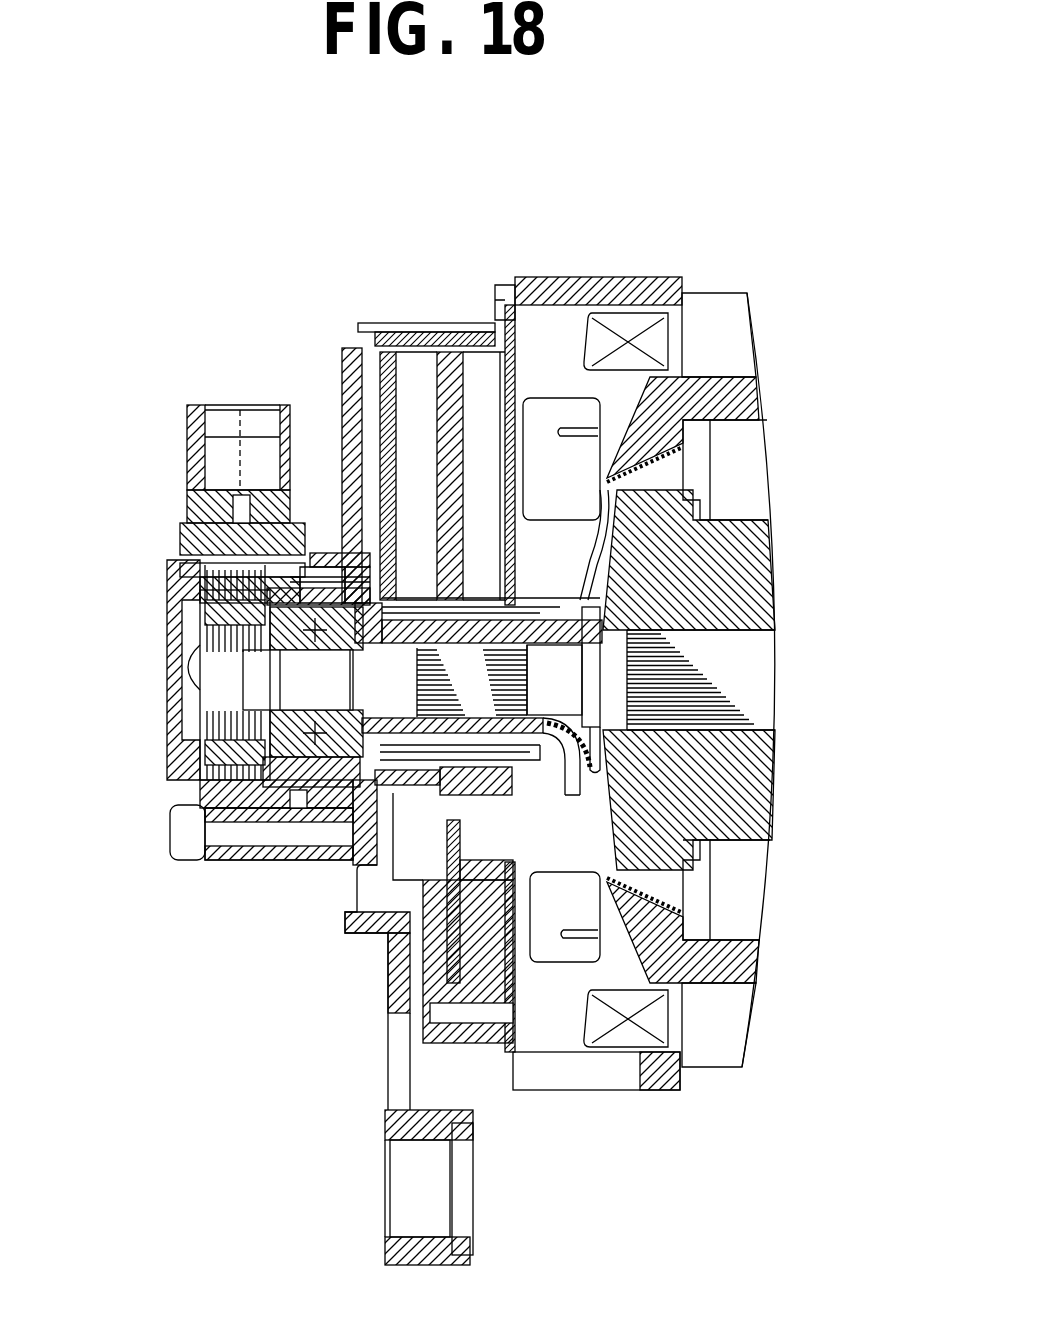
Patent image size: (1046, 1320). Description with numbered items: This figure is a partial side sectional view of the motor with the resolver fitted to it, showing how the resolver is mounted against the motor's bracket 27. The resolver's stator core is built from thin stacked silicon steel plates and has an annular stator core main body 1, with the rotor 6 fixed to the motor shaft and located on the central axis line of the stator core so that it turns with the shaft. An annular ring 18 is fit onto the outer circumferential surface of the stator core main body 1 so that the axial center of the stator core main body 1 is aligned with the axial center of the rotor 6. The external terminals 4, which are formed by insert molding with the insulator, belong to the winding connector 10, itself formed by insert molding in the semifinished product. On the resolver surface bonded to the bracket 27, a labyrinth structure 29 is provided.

The winding connector 10 is at (200, 458).
The external terminals 4 is at (178, 493).
The rotor 6 is at (200, 636).
The stator core main body 1 is at (165, 785).
The annular ring 18 is at (240, 835).
The labyrinth structure 29 is at (300, 835).
The bracket 27 is at (372, 965).